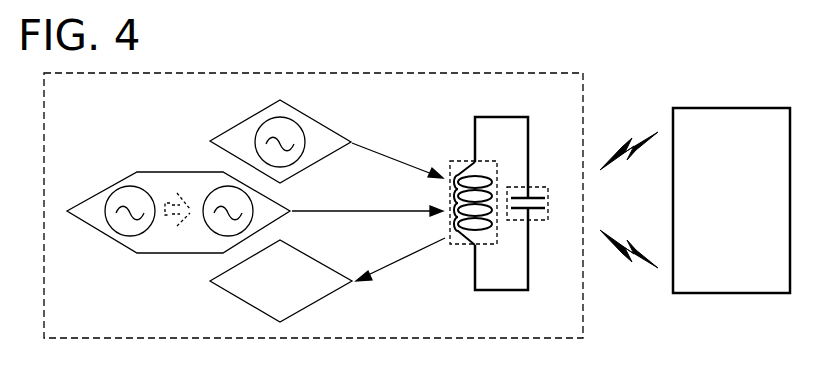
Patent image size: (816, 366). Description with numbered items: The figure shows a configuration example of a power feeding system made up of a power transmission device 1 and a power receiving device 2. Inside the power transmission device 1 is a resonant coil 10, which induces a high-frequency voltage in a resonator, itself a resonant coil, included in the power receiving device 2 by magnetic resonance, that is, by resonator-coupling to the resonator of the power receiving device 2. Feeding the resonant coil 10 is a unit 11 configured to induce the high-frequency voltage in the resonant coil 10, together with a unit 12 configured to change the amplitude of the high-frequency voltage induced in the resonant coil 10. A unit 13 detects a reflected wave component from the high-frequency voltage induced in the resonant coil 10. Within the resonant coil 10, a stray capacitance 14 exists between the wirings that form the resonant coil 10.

The power transmission device 1 is at (313, 205).
The power receiving device 2 is at (731, 200).
The resonant coil 10 is at (459, 244).
The unit configured to induce a high-frequency voltage 11 is at (327, 125).
The unit configured to change amplitude of the high-frequency voltage 12 is at (120, 172).
The unit configured to detect a reflected wave component 13 is at (223, 292).
The stray capacitance 14 is at (535, 185).